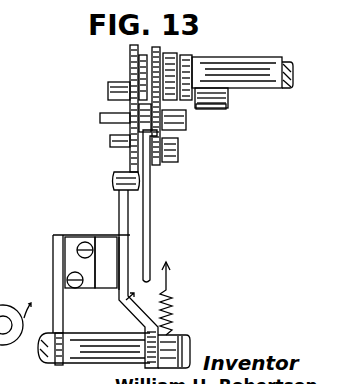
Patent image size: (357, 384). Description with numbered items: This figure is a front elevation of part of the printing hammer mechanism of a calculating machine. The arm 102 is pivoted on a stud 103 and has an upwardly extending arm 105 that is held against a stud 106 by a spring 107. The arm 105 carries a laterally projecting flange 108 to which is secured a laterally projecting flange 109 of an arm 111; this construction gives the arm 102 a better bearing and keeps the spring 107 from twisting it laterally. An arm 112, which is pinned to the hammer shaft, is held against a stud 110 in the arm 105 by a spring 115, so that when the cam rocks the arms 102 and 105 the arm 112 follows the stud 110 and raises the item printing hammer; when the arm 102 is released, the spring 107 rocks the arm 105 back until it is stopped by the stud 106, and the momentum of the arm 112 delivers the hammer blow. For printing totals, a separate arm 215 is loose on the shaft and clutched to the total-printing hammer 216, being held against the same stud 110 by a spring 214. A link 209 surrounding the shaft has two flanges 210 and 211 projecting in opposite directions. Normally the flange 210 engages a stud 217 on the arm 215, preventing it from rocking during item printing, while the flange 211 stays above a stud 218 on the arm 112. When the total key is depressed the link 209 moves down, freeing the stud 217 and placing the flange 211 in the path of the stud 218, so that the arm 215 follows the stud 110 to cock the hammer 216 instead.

The arm 102 is at (192, 352).
The stud 103 is at (116, 363).
The upwardly extending arm 105 is at (119, 205).
The stud 106 is at (114, 178).
The spring 107 is at (172, 298).
The laterally projecting flange 108 is at (117, 288).
The laterally projecting flange 109 is at (68, 242).
The stud 110 is at (166, 162).
The arm 111 is at (63, 319).
The arm 112 is at (130, 52).
The spring 115 is at (128, 114).
The link 209 is at (150, 216).
The flange 210 is at (130, 150).
The flange 211 is at (119, 95).
The spring 214 is at (208, 108).
The arm 215 is at (176, 58).
The total-printing hammer 216 is at (240, 57).
The stud 217 is at (176, 120).
The stud 218 is at (139, 116).